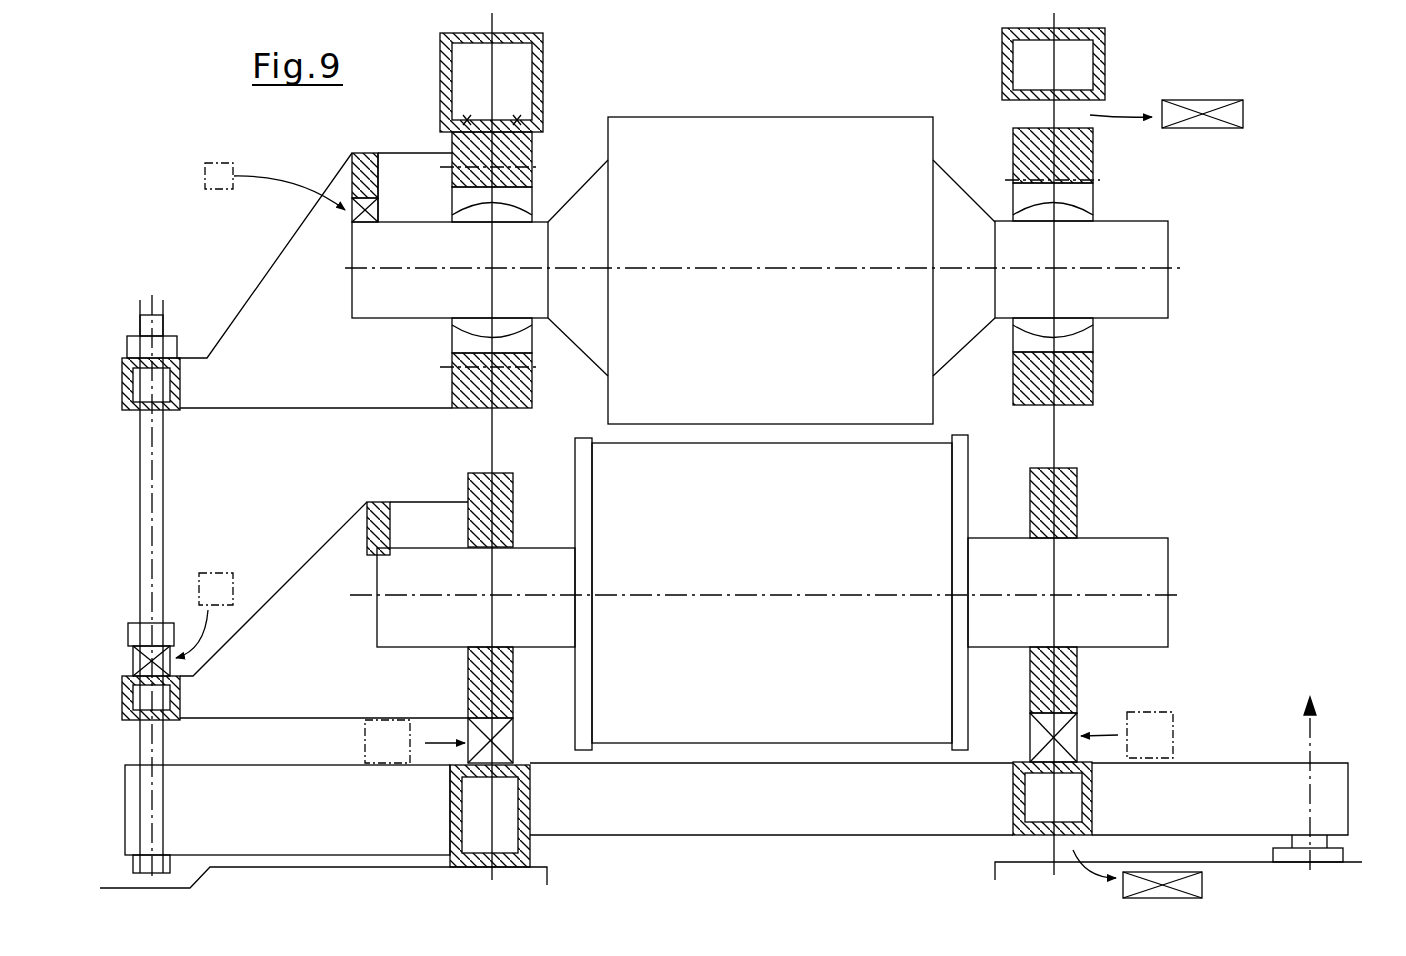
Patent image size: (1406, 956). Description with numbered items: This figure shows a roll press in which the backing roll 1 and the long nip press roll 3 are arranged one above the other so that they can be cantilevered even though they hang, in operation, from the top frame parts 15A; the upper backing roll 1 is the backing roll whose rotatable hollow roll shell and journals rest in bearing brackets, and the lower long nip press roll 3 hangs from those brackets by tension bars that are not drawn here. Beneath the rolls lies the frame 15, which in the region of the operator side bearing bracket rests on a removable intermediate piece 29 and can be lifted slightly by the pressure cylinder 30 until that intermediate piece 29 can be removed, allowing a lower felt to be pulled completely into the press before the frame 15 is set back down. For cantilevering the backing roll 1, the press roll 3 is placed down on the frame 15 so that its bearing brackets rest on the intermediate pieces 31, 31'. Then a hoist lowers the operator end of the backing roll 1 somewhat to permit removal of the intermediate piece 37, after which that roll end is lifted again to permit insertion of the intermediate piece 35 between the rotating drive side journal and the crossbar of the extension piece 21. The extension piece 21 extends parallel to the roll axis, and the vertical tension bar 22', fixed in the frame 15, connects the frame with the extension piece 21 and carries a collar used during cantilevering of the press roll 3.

The backing roll 1 is at (1185, 224).
The long nip press roll 3 is at (1178, 545).
The frame 15 is at (1205, 770).
The top frame parts 15A is at (538, 90).
The extension piece 21 is at (303, 580).
The tension bar 22' is at (173, 587).
The removable intermediate piece 29 is at (1203, 880).
The pressure cylinder 30 is at (1340, 856).
The intermediate piece 31 is at (1101, 718).
The intermediate piece 31' is at (468, 739).
The intermediate piece 35 is at (212, 165).
The intermediate piece 37 is at (1243, 104).